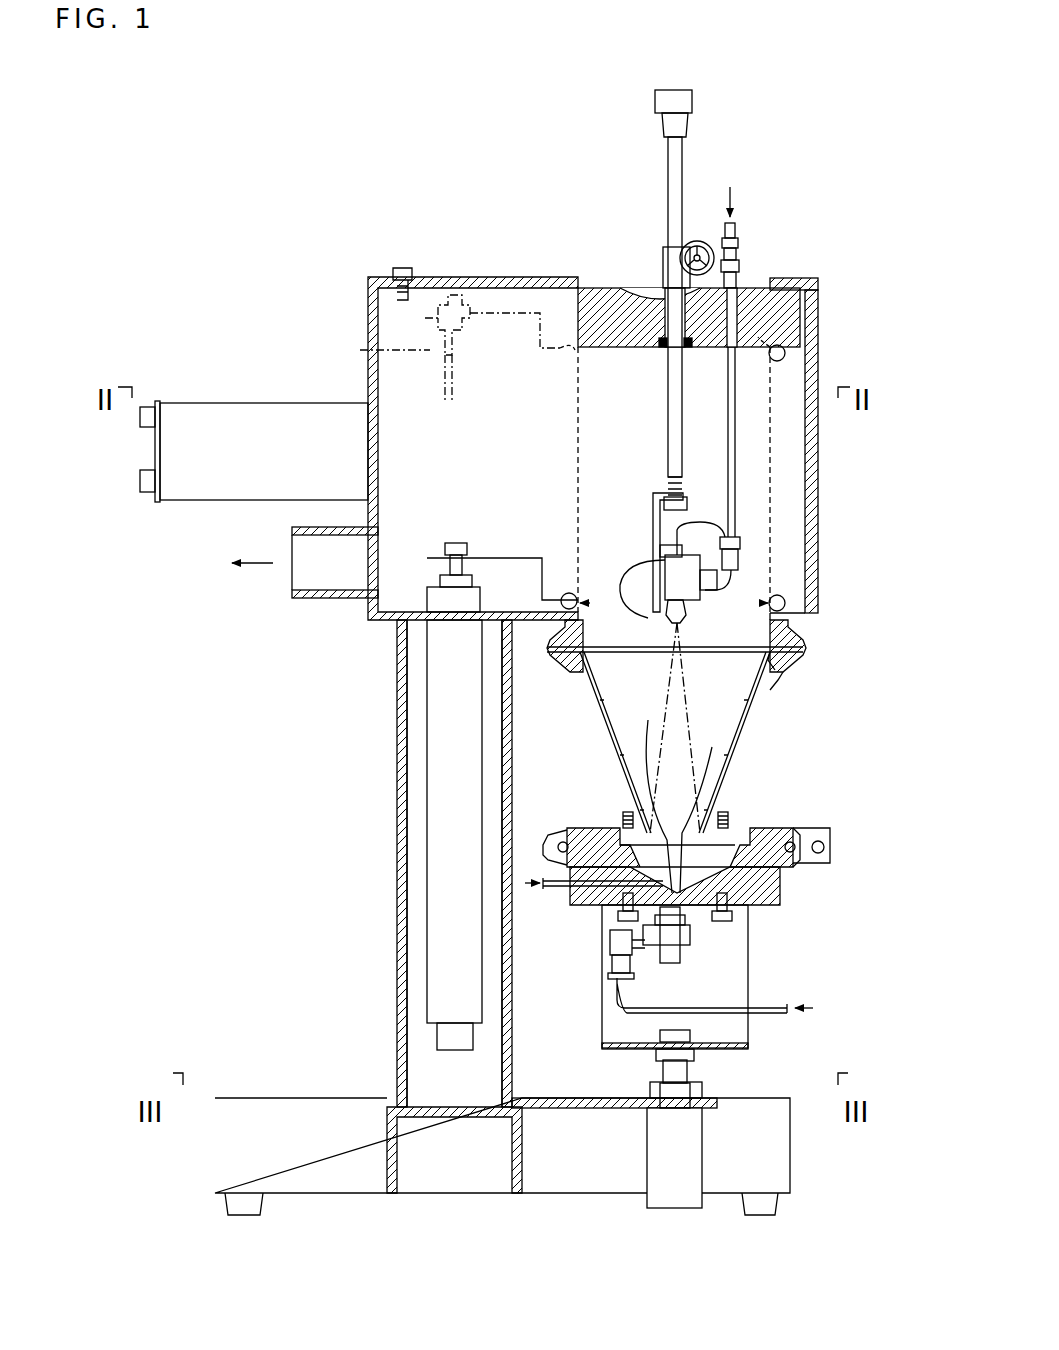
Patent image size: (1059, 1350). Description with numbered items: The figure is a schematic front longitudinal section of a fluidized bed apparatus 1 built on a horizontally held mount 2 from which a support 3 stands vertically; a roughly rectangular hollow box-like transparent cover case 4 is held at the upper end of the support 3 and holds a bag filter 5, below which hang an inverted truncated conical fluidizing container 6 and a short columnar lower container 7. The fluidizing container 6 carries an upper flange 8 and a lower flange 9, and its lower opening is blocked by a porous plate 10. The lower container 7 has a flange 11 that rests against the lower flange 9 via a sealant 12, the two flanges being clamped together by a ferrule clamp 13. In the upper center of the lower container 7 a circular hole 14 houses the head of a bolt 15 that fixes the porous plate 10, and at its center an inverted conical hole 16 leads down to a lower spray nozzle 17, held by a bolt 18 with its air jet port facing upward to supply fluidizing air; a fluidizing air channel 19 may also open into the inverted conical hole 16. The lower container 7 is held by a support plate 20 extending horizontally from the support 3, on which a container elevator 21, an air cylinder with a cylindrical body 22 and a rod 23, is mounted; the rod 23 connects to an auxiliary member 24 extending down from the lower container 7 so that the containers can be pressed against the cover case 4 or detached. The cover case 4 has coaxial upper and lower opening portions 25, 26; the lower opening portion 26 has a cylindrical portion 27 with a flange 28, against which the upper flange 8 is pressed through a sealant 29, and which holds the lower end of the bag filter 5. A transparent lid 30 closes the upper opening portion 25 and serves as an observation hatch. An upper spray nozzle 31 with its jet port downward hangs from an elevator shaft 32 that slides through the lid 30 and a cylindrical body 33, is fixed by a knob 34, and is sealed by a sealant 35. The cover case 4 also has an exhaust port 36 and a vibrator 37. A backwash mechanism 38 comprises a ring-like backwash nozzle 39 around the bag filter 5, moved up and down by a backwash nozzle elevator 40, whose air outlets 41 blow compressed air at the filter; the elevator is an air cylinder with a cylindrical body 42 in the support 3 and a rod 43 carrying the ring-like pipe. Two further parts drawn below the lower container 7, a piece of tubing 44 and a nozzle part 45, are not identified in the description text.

The fluidized bed apparatus 1 is at (372, 245).
The mount 2 is at (313, 1098).
The support 3 is at (400, 843).
The cover case 4 is at (368, 296).
The bag filter 5 is at (772, 468).
The fluidizing container 6 is at (744, 740).
The lower container 7 is at (788, 885).
The upper flange 8 is at (790, 662).
The lower flange 9 is at (762, 830).
The porous plate 10 is at (646, 800).
The flange 11 is at (802, 852).
The sealant 12 is at (806, 840).
The ferrule clamp 13 is at (548, 830).
The circular hole 14 is at (750, 897).
The bolt 15 is at (628, 826).
The inverted conical hole 16 is at (700, 790).
The lower spray nozzle 17 is at (700, 962).
The bolt 18 is at (612, 940).
The fluidizing air channel 19 is at (586, 887).
The support plate 20 is at (598, 1110).
The container elevator 21 is at (710, 1090).
The cylindrical body 22 is at (690, 1165).
The rod 23 is at (663, 1068).
The auxiliary member 24 is at (750, 1040).
The upper opening portion 25 is at (758, 286).
The lower opening portion 26 is at (762, 640).
The cylindrical portion 27 is at (796, 620).
The flange 28 is at (802, 648).
The sealant 29 is at (800, 656).
The lid 30 is at (612, 302).
The upper spray nozzle 31 is at (652, 556).
The elevator shaft 32 is at (668, 157).
The cylindrical body 33 is at (663, 258).
The knob 34 is at (701, 241).
The sealant 35 is at (663, 347).
The exhaust port 36 is at (302, 568).
The vibrator 37 is at (246, 406).
The backwash mechanism 38 is at (566, 585).
The backwash nozzle 39 is at (786, 350).
The backwash nozzle elevator 40 is at (425, 690).
The air outlets 41 is at (572, 592).
The cylindrical body 42 is at (435, 765).
The rod 43 is at (435, 350).
The tube 44 is at (655, 955).
The nozzle 45 is at (690, 935).